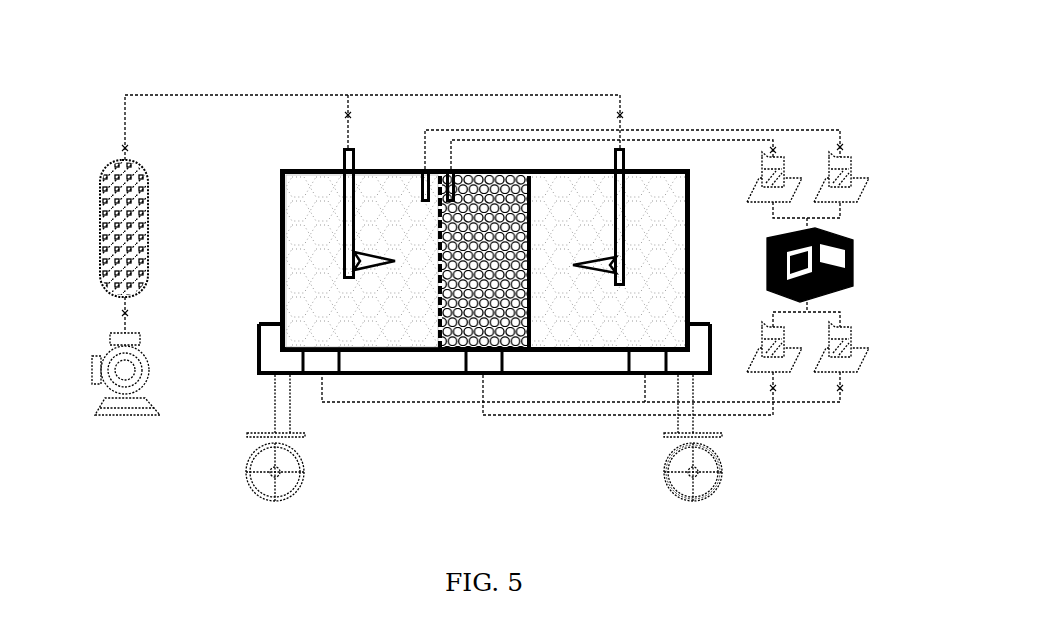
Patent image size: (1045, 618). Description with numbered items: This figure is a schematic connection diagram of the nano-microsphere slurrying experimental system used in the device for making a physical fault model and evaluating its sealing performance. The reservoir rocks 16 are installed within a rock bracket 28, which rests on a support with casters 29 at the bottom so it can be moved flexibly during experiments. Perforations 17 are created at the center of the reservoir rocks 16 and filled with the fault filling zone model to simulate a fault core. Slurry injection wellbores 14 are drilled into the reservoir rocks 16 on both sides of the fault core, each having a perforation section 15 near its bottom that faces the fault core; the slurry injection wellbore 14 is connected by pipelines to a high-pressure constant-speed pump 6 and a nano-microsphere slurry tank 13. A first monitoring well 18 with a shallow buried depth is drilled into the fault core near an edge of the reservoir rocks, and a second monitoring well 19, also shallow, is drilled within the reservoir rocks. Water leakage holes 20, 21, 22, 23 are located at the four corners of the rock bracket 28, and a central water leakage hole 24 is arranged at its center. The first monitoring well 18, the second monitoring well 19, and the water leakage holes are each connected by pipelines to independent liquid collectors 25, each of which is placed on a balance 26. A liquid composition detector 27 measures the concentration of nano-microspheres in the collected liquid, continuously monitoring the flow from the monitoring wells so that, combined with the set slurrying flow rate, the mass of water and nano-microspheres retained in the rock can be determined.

The high-pressure constant-speed pump 6 is at (92, 371).
The nano-microsphere slurry tank 13 is at (100, 228).
The slurry injection wellbore 14 is at (345, 148).
The perforation section 15 is at (345, 237).
The reservoir rocks 16 is at (328, 247).
The perforations 17 is at (438, 297).
The first monitoring well 18 is at (448, 168).
The second monitoring well 19 is at (422, 168).
The water leakage hole 20 is at (650, 375).
The water leakage hole 21 is at (693, 472).
The water leakage hole 22 is at (693, 406).
The water leakage hole 23 is at (693, 472).
The central water leakage hole 24 is at (495, 375).
The liquid collector 25 is at (838, 176).
The balance 26 is at (855, 200).
The liquid composition detector 27 is at (855, 258).
The rock bracket 28 is at (265, 357).
The casters 29 is at (262, 483).